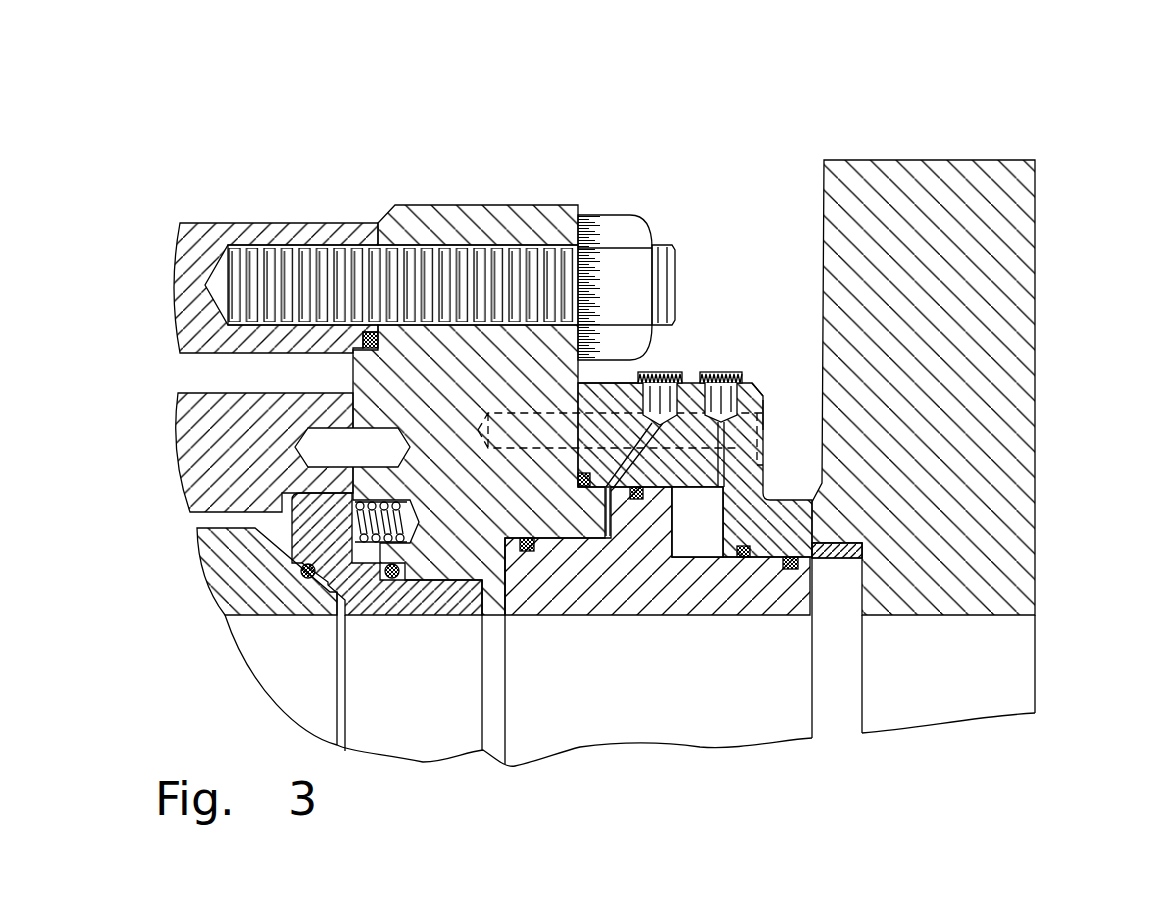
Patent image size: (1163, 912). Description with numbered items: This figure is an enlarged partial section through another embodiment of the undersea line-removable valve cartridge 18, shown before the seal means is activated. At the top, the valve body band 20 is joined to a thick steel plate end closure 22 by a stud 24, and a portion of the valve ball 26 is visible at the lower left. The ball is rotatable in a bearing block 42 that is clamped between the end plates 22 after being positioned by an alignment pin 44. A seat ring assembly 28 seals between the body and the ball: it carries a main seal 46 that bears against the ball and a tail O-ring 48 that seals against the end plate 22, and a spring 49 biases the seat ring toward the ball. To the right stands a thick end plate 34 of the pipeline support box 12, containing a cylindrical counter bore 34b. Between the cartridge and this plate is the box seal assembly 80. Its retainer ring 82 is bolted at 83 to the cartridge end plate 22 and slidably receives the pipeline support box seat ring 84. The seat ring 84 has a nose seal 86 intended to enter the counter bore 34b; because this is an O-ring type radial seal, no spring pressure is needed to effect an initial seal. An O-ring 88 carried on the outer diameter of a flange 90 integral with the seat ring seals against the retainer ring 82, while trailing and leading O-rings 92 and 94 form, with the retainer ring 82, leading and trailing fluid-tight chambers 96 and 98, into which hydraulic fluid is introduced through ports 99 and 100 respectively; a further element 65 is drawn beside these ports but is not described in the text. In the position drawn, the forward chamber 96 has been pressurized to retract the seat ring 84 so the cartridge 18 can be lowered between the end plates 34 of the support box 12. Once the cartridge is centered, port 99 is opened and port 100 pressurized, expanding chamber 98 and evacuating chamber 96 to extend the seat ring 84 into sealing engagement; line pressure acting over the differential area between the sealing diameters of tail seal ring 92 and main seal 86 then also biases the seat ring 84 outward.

The pipeline support box 12 is at (1058, 268).
The valve cartridge 18 is at (599, 196).
The valve body band 20 is at (262, 232).
The end closure 22 is at (430, 212).
The stud 24 is at (662, 255).
The valve closure member 26 is at (228, 575).
The seat ring assembly 28 is at (370, 592).
The end plate 34 is at (1037, 412).
The cylindrical counter bore 34b is at (835, 560).
The bearing block 42 is at (205, 467).
The alignment pin 44 is at (352, 432).
The main seal 46 is at (308, 579).
The tail O-ring 48 is at (394, 579).
The spring 49 is at (408, 510).
The plug 65 is at (661, 374).
The box seal assembly 80 is at (757, 381).
The retainer ring 82 is at (758, 393).
The bolt 83 is at (766, 414).
The pipeline support box seat ring 84 is at (584, 605).
The nose seal 86 is at (790, 556).
The O-ring 88 is at (636, 500).
The flange 90 is at (697, 522).
The trailing O-ring 92 is at (528, 552).
The leading O-ring 94 is at (746, 547).
The leading fluid-tight chamber 96 is at (684, 523).
The trailing fluid-tight chamber 98 is at (605, 498).
The port 99 is at (723, 373).
The port 100 is at (609, 374).